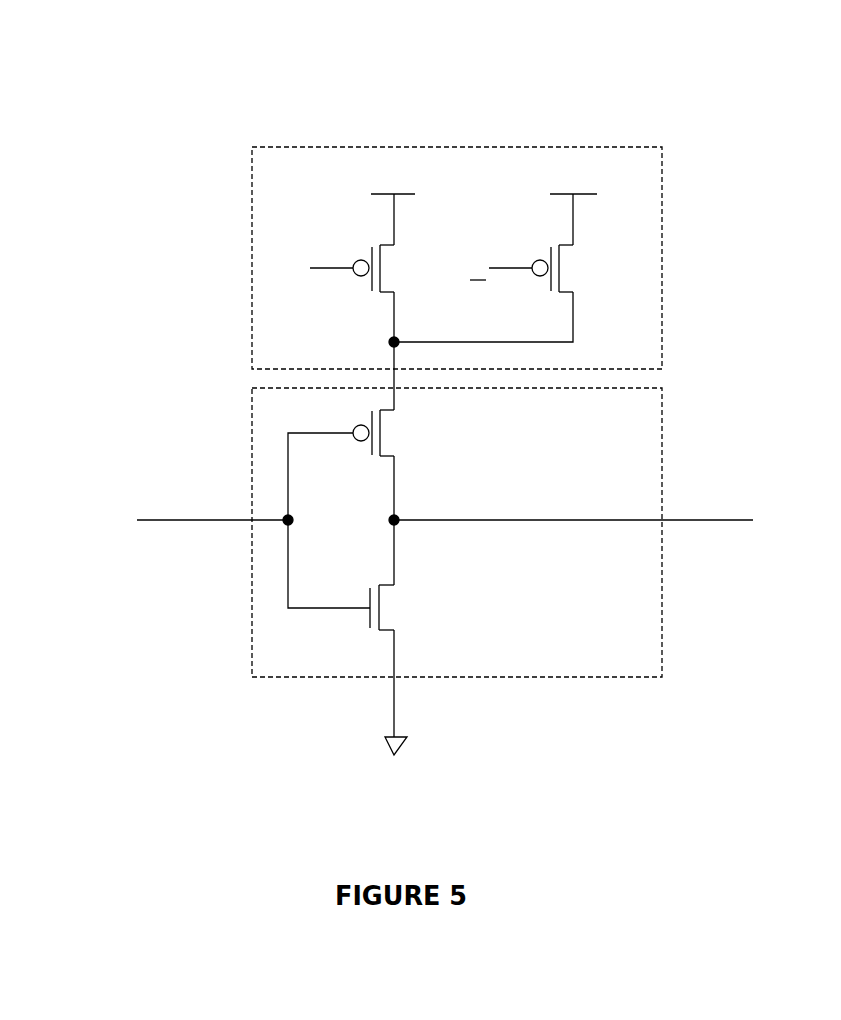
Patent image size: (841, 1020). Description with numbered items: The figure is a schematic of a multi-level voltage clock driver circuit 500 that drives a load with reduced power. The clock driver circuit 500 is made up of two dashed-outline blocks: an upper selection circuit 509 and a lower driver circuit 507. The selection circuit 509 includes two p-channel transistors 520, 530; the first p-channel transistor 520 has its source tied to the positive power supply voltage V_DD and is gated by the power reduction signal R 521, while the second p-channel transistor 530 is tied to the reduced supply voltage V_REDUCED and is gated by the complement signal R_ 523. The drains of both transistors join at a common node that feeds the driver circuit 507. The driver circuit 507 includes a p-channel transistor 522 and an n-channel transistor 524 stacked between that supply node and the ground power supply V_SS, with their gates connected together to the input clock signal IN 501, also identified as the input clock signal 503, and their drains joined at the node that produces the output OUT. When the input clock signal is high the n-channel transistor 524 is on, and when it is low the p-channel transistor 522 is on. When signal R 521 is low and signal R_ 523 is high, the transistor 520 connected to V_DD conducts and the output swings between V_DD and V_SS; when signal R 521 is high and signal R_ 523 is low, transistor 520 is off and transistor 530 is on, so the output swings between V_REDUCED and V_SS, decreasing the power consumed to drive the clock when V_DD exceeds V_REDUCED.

The clock driver circuit 500 is at (746, 133).
The input clock signal IN 501 is at (170, 520).
The input clock signal 503 is at (717, 520).
The driver circuit 507 is at (250, 415).
The selection circuit 509 is at (250, 173).
The p-channel transistor 520 is at (371, 283).
The signal R 521 is at (328, 268).
The p-channel transistor 522 is at (372, 448).
The signal R_ 523 is at (508, 268).
The n-channel transistor 524 is at (368, 622).
The p-channel transistor 530 is at (550, 283).